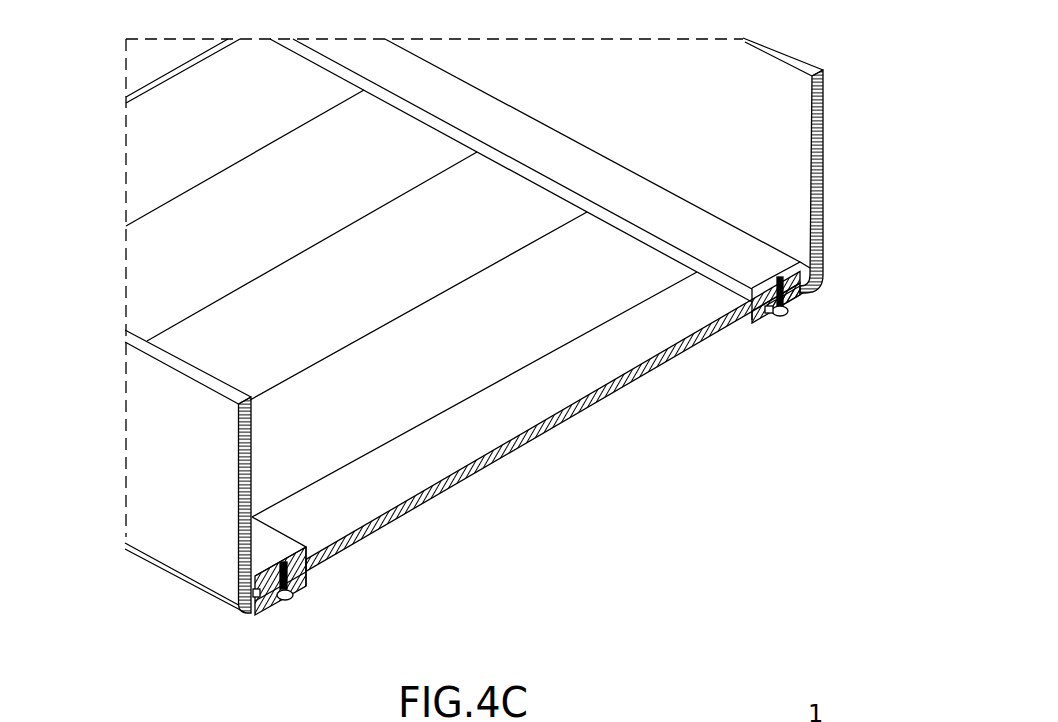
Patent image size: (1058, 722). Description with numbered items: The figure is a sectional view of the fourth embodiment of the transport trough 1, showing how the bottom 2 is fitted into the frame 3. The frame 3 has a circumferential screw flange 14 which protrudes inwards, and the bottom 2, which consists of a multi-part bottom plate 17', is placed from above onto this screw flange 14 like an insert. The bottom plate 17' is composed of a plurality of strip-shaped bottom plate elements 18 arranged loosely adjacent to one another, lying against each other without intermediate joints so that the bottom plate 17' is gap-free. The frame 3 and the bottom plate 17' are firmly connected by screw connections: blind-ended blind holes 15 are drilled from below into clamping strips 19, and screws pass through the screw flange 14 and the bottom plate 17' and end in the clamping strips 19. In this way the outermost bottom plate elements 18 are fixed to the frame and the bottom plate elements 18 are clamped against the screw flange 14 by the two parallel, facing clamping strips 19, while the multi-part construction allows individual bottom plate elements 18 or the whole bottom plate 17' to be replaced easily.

The transport trough 1 is at (520, 313).
The bottom 2 is at (462, 368).
The frame 3 is at (795, 167).
The screw flange 14 is at (277, 592).
The blind hole 15 is at (305, 566).
The bottom plate 17' is at (553, 421).
The bottom plate element 18 is at (180, 267).
The clamping strip 19 is at (256, 565).